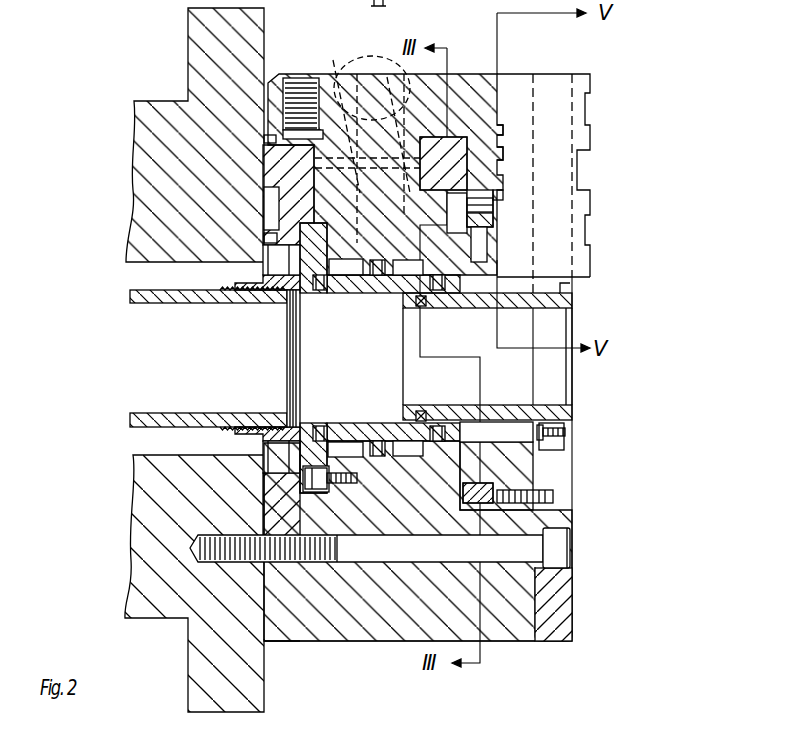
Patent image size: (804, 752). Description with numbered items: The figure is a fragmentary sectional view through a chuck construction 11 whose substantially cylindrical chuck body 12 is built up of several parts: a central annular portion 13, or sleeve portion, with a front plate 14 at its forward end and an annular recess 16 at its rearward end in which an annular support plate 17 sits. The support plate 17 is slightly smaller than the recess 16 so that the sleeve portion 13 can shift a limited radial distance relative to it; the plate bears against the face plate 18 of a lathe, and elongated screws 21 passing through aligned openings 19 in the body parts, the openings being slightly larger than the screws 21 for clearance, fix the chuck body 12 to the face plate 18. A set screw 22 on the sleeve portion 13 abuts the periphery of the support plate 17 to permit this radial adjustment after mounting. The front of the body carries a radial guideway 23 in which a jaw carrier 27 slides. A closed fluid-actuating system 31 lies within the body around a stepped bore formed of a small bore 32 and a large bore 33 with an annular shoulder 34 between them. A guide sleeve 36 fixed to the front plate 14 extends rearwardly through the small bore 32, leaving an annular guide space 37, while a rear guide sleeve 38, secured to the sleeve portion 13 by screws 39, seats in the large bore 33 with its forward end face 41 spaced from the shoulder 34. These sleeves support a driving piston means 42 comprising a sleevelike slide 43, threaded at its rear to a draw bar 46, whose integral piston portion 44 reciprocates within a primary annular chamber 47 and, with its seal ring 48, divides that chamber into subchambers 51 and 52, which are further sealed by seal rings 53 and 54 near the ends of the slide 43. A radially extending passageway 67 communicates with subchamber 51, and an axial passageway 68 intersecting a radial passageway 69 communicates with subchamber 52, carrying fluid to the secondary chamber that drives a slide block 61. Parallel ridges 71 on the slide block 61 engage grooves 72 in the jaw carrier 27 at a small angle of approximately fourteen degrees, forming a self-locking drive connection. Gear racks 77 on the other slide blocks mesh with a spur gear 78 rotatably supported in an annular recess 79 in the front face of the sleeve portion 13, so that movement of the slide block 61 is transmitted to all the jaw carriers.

The chuck construction 11 is at (624, 170).
The chuck body 12 is at (517, 650).
The central annular portion 13 is at (385, 645).
The front plate 14 is at (567, 594).
The annular recess 16 is at (264, 140).
The annular support plate 17 is at (287, 169).
The face plate 18 is at (200, 42).
The openings 19 is at (427, 553).
The elongated screws 21 is at (530, 546).
The set screw 22 is at (295, 90).
The guideway 23 is at (498, 95).
The jaw carrier 27 is at (592, 73).
The closed fluid-actuating system 31 is at (248, 232).
The small bore 32 is at (512, 438).
The large bore 33 is at (401, 455).
The annular shoulder 34 is at (420, 443).
The guide sleeve 36 is at (517, 410).
The annular guide space 37 is at (504, 282).
The rear guide sleeve 38 is at (333, 432).
The screws 39 is at (303, 480).
The forward axial end face 41 is at (367, 459).
The primary or driving piston means 42 is at (358, 310).
The sleevelike slide 43 is at (340, 292).
The piston portion 44 is at (378, 262).
The draw bar 46 is at (200, 418).
The primary annular chamber 47 is at (393, 414).
The resilient seal ring 48 is at (383, 458).
The subchamber 51 is at (405, 270).
The subchamber 52 is at (362, 300).
The seal ring 53 is at (437, 290).
The seal ring 54 is at (293, 307).
The slide block 61 is at (477, 137).
The radially extending passageway 67 is at (400, 72).
The axial passageway 68 is at (366, 172).
The radially directed passageway 69 is at (353, 117).
The ridges 71 is at (503, 155).
The grooves 72 is at (499, 127).
The gear rack 77 is at (493, 203).
The spur gear 78 is at (493, 220).
The annular recess 79 is at (480, 262).